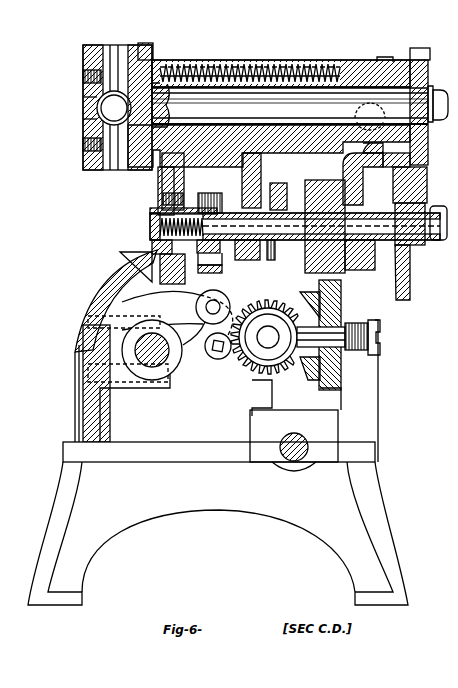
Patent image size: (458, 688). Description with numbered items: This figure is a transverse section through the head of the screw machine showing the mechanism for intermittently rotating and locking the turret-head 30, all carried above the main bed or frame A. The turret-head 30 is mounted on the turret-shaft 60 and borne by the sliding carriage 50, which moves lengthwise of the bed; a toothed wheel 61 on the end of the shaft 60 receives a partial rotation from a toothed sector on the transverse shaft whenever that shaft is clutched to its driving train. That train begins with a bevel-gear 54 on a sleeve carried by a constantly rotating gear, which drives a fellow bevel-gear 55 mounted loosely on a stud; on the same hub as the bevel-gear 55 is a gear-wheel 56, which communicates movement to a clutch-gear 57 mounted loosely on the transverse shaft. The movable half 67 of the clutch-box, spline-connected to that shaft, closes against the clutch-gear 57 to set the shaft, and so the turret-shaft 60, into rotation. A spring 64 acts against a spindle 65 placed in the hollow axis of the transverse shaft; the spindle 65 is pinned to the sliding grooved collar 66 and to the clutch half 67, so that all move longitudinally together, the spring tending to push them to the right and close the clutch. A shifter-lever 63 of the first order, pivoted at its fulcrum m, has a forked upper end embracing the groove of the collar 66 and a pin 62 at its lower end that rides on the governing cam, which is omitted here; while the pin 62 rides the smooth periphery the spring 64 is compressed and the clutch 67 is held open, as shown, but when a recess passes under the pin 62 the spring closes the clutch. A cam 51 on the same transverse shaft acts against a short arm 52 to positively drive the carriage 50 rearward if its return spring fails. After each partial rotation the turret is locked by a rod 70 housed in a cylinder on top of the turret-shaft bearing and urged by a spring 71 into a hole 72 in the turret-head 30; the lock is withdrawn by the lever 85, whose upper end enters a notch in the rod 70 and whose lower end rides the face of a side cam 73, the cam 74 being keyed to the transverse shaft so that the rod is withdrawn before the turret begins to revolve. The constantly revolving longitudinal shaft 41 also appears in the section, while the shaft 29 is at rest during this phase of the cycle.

The turret-head 30 is at (117, 100).
The hole 72 is at (136, 46).
The spring 71 is at (272, 63).
The rod 70 is at (356, 73).
The lever 85 is at (388, 57).
The turret-shaft 60 is at (278, 113).
The toothed wheel 61 is at (430, 84).
The sliding carriage 50 is at (158, 170).
The sliding grooved collar 66 is at (179, 218).
The cam 51 is at (248, 192).
The cam 74 is at (399, 206).
The short arm 52 is at (431, 180).
The spindle 65 is at (295, 223).
The spring 64 is at (150, 222).
The movable half of the clutch-box 67 is at (270, 269).
The clutch-gear 57 is at (335, 315).
The side cam 73 is at (408, 287).
The lever 63 is at (213, 288).
The fulcrum m is at (198, 307).
The main bed or frame A is at (218, 427).
The longitudinal shaft 41 is at (165, 360).
The pin 62 is at (212, 354).
The shaft 29 is at (264, 337).
The gear-wheel 56 is at (326, 390).
The bevel-gear 54 is at (244, 366).
The bevel-gear 55 is at (306, 370).